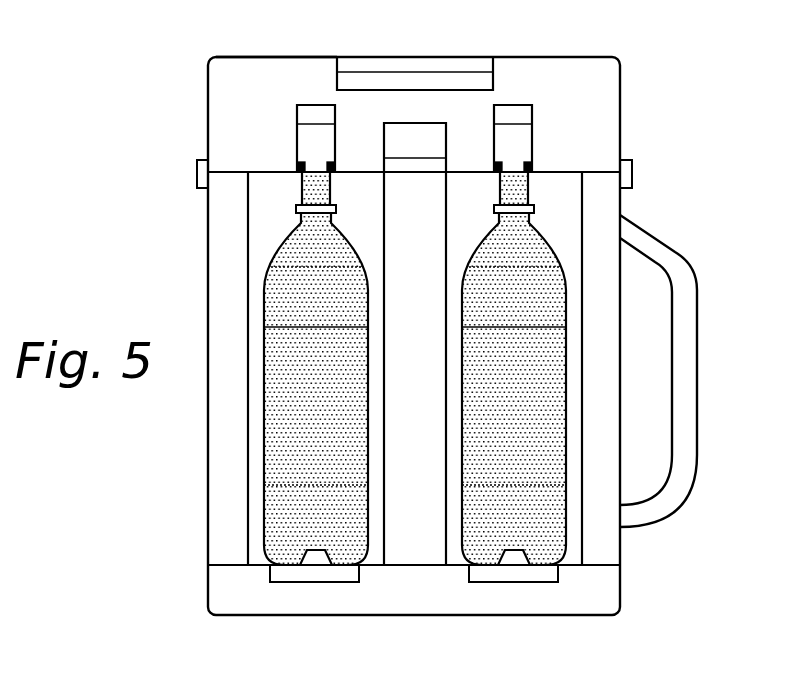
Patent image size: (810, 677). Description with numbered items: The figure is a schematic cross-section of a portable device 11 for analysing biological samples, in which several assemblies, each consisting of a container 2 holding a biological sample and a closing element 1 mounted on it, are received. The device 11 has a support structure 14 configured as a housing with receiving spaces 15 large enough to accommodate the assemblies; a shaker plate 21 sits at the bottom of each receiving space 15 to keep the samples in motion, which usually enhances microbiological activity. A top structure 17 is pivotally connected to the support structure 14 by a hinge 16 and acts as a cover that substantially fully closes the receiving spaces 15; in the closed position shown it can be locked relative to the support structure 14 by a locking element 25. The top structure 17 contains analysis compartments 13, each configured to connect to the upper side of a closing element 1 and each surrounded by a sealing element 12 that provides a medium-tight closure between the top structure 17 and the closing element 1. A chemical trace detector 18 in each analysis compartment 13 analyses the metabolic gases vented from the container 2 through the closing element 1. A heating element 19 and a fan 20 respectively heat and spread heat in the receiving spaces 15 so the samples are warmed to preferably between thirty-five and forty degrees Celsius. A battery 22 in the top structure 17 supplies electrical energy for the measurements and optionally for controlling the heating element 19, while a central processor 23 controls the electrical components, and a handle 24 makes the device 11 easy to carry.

The closing element 1 is at (312, 189).
The container 2 is at (325, 419).
The portable device 11 is at (657, 53).
The sealing element 12 is at (300, 168).
The analysis compartment 13 is at (310, 143).
The support structure 14 is at (234, 592).
The receiving space 15 is at (257, 502).
The hinge 16 is at (197, 175).
The top structure 17 is at (222, 77).
The chemical trace detector 18 is at (310, 115).
The heating element 19 is at (408, 133).
The fan 20 is at (418, 165).
The shaker plate 21 is at (318, 573).
The battery 22 is at (388, 63).
The central processor 23 is at (453, 82).
The handle 24 is at (685, 366).
The locking element 25 is at (634, 173).